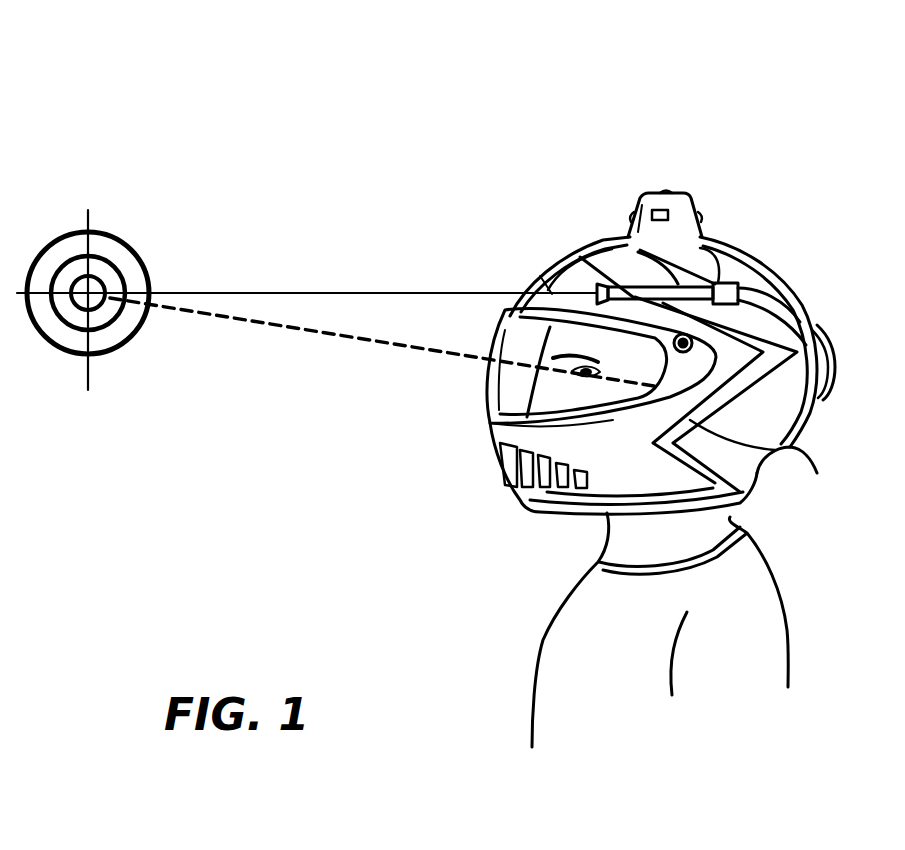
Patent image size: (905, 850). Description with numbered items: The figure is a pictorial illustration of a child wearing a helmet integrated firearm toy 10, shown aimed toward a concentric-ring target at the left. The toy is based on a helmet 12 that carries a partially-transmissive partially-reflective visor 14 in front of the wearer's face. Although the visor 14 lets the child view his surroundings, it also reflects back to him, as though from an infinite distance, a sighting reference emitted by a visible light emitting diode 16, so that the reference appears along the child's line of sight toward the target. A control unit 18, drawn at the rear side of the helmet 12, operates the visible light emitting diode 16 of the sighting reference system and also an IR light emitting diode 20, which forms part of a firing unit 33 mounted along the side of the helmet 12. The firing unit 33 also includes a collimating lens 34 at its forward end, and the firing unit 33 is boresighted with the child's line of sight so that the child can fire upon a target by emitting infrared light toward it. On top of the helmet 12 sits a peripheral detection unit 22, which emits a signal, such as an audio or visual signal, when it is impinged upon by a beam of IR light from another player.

The helmet integrated firearm toy 10 is at (482, 160).
The helmet 12 is at (537, 293).
The partially-transmissive partially-reflective visor 14 is at (492, 384).
The visible light emitting diode 16 is at (790, 448).
The control unit 18 is at (833, 393).
The IR light emitting diode 20 is at (720, 279).
The peripheral detection unit 22 is at (688, 197).
The firing unit 33 is at (615, 284).
The collimating lens 34 is at (603, 284).